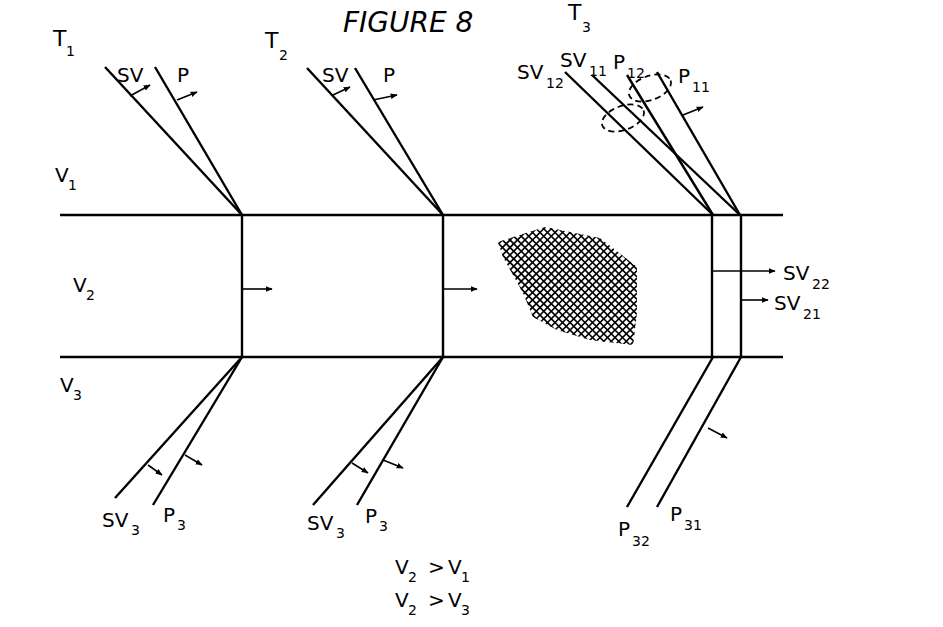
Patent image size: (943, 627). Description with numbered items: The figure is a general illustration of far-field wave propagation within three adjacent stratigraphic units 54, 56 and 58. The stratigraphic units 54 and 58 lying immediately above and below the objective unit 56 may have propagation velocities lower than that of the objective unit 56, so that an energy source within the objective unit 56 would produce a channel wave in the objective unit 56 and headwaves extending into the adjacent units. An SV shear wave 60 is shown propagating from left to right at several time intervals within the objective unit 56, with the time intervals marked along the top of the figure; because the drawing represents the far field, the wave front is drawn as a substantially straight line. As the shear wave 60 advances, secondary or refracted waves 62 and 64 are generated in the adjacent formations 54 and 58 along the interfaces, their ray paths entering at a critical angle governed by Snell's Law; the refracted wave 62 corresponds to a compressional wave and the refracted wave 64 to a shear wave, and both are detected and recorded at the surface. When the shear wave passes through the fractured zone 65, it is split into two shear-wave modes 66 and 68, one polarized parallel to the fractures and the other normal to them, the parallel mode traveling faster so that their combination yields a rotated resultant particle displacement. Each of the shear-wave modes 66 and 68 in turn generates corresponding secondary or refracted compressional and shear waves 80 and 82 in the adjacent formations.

The stratigraphic unit 54 is at (72, 132).
The objective unit 56 is at (70, 258).
The stratigraphic unit 58 is at (85, 445).
The SV shear wave 60 is at (243, 320).
The secondary or refracted compressional wave 62 is at (192, 127).
The secondary or refracted shear wave 64 is at (177, 147).
The fractured zone 65 is at (576, 343).
The shear-wave mode 66 is at (742, 335).
The shear-wave mode 68 is at (711, 322).
The secondary or refracted compressional wave 80 is at (645, 67).
The secondary or refracted shear wave 82 is at (611, 131).